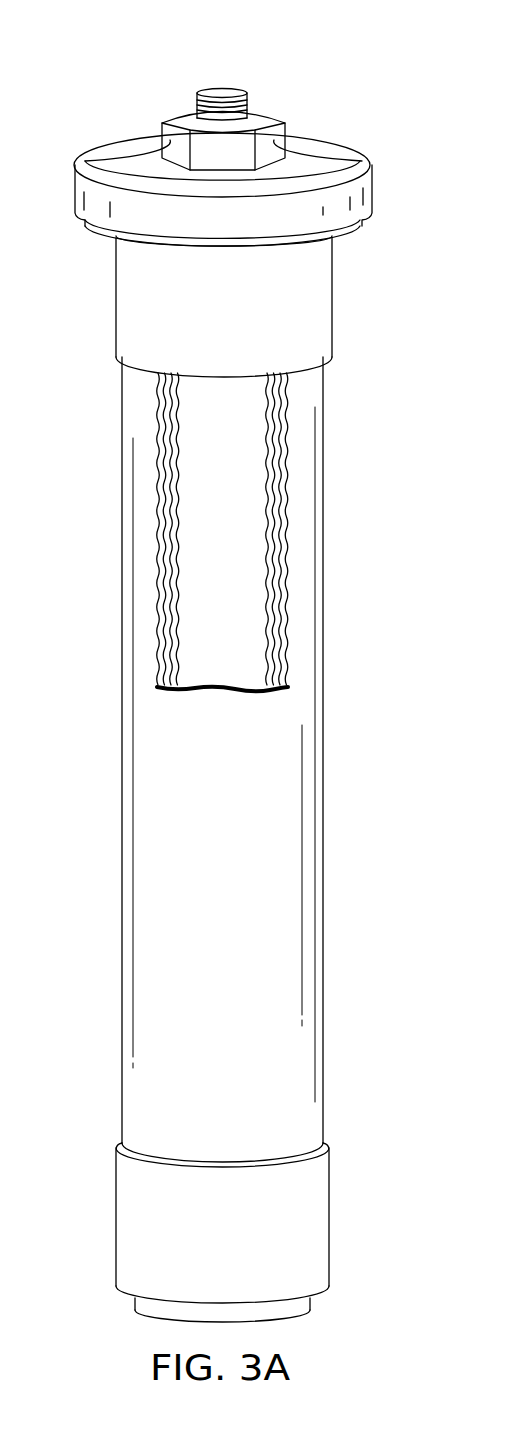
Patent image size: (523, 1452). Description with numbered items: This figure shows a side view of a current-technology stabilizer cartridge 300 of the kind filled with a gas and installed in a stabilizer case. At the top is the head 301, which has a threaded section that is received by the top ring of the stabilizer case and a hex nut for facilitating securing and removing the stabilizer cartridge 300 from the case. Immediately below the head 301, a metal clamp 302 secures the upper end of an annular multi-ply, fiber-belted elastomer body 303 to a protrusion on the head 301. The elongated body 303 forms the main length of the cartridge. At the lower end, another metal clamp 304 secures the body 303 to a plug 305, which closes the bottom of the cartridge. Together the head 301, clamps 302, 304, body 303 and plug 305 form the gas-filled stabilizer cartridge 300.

The stabilizer cartridge 300 is at (130, 70).
The head 301 is at (372, 188).
The metal clamp 302 is at (117, 295).
The annular multi-ply, fiber-belted elastomer body 303 is at (122, 582).
The metal clamp 304 is at (330, 1215).
The plug 305 is at (147, 1315).